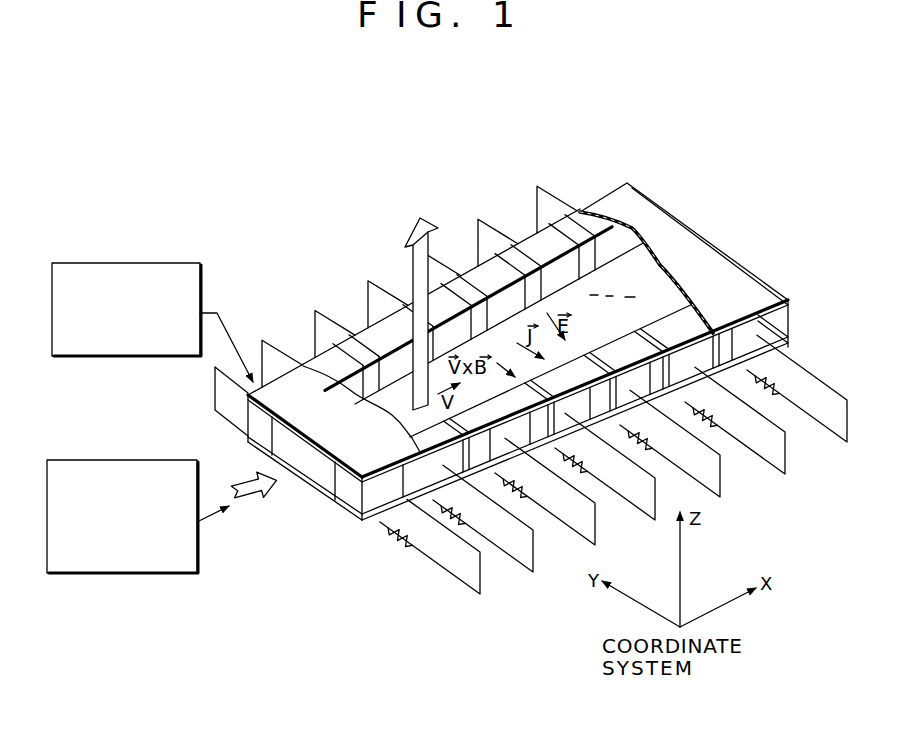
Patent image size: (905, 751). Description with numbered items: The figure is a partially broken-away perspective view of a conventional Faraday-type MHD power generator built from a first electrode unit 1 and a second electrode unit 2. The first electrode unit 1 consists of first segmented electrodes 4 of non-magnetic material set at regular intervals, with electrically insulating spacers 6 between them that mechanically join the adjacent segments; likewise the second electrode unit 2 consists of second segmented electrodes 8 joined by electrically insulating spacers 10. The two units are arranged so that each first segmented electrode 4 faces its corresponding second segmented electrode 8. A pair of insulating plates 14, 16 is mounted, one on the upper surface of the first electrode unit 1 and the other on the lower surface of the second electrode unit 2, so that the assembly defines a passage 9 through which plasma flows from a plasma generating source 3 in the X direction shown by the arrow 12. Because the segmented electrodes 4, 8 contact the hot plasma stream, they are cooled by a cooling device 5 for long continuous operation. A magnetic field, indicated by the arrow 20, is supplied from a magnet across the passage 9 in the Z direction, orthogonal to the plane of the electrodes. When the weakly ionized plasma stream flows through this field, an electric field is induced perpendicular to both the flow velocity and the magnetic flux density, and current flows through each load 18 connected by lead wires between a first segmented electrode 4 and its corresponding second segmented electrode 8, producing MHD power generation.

The first electrode unit 1 is at (510, 226).
The second electrode unit 2 is at (783, 326).
The plasma generating source 3 is at (196, 568).
The first segmented electrode 4 is at (318, 370).
The cooling device 5 is at (186, 267).
The electrically insulating spacer 6 is at (362, 352).
The second segmented electrode 8 is at (381, 527).
The passage 9 is at (663, 281).
The electrically insulating spacer 10 is at (411, 444).
The arrow indicating plasma flow direction 12 is at (236, 488).
The insulating plate 14 is at (623, 198).
The insulating plate 16 is at (316, 489).
The load 18 is at (462, 523).
The arrow indicating magnetic field 20 is at (429, 217).